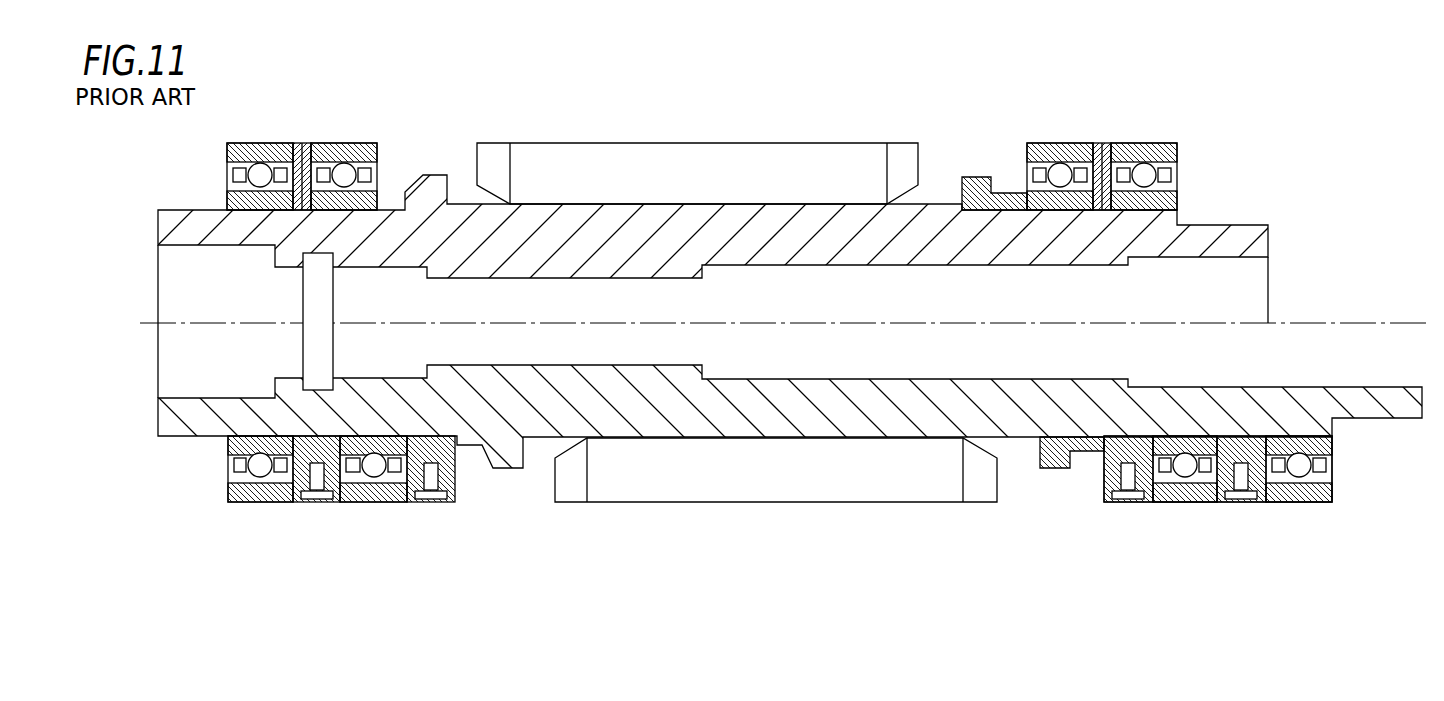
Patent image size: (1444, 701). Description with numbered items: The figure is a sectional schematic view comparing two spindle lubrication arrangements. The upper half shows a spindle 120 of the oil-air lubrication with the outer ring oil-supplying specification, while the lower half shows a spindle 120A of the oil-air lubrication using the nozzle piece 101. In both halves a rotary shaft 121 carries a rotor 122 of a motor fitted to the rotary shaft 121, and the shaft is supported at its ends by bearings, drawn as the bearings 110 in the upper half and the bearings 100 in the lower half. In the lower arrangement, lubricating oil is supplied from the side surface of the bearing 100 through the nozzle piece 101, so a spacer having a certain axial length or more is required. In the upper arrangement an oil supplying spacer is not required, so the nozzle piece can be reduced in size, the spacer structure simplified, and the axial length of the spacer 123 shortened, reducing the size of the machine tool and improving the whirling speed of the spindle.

The bearing 100 is at (258, 512).
The nozzle piece 101 is at (313, 512).
The angular contact ball bearing 110 is at (268, 132).
The spindle 120 is at (1201, 98).
The spindle 120A is at (1202, 572).
The rotary shaft 121 is at (713, 237).
The rotor of a motor 122 is at (792, 468).
The spacer 123 is at (309, 141).